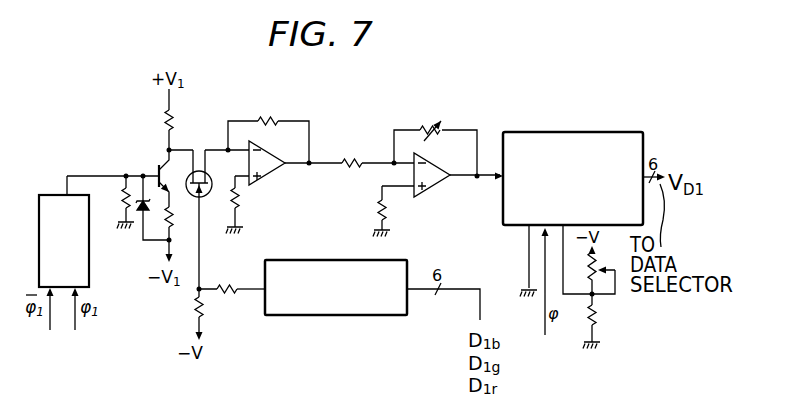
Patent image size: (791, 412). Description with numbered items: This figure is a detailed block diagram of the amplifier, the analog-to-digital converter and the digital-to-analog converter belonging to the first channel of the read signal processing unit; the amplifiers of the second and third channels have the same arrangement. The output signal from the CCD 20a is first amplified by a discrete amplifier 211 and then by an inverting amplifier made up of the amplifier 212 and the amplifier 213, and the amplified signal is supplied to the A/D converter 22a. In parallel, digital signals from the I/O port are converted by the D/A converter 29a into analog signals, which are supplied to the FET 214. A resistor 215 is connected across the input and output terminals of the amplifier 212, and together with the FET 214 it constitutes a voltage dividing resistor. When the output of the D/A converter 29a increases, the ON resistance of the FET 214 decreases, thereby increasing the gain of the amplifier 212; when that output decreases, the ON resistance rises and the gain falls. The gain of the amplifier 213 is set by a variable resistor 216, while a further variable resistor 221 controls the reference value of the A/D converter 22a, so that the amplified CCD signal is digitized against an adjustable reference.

The discrete amplifier 211 is at (157, 170).
The FET (field effect transistor) 214 is at (199, 160).
The resistor 215 is at (270, 117).
The amplifier 212 is at (273, 173).
The variable resistor 216 is at (432, 125).
The amplifier 213 is at (433, 187).
The A/D converter 22a is at (552, 131).
The CCD 20a is at (89, 263).
The D/A converter 29a is at (327, 315).
The variable resistor 221 is at (598, 277).